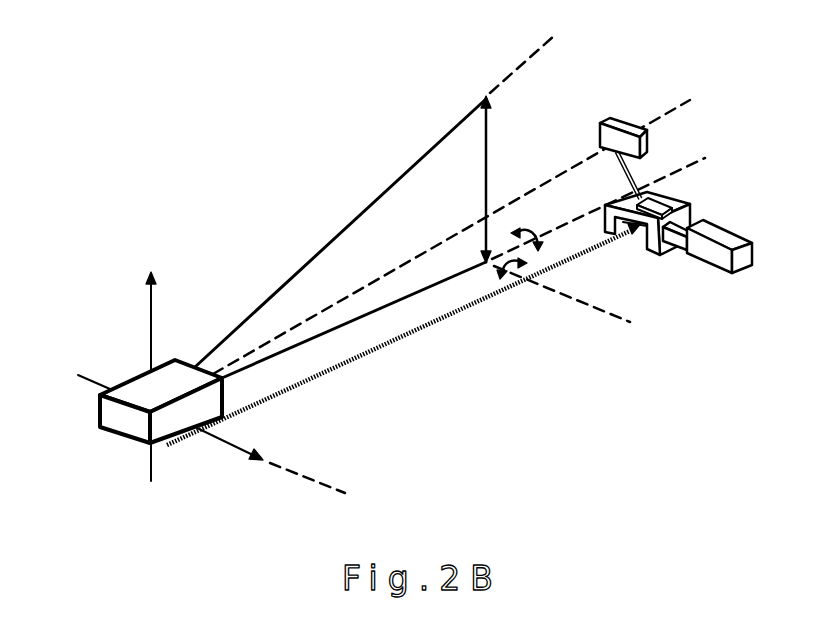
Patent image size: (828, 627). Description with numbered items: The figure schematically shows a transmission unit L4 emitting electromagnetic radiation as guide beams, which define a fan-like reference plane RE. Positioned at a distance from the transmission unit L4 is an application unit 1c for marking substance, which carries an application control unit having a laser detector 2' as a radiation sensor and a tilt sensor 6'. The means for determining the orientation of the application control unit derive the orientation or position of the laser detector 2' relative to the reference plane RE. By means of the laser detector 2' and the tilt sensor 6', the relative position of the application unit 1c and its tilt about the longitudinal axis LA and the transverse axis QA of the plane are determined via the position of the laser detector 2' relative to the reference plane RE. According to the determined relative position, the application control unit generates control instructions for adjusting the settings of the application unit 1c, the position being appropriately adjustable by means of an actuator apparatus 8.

The transmission unit L4 is at (128, 425).
The reference plane RE is at (378, 229).
The longitudinal axis LA is at (287, 351).
The transverse axis QA is at (198, 430).
The application unit 1c is at (652, 252).
The laser detector 2' is at (634, 130).
The tilt sensor 6' is at (711, 169).
The actuator apparatus 8 is at (700, 284).